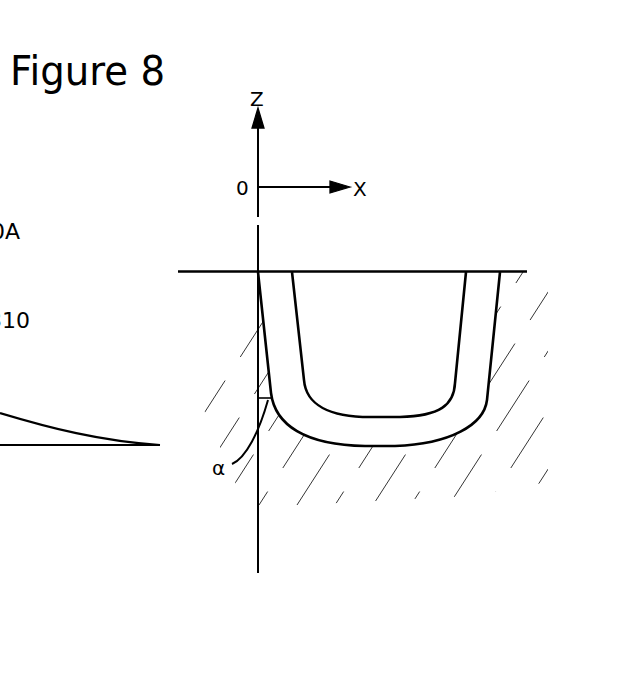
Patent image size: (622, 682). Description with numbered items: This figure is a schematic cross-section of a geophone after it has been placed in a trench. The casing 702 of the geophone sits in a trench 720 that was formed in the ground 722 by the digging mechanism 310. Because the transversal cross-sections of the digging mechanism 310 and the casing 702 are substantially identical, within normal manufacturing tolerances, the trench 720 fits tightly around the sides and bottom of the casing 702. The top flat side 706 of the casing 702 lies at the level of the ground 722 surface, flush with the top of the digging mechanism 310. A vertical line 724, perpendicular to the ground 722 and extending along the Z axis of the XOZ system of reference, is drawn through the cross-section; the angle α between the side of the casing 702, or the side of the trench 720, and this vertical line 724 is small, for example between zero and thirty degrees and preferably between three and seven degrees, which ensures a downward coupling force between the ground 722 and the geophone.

The casing 702 is at (498, 300).
The top flat side 706 is at (397, 271).
The digging mechanism 310 is at (492, 358).
The trench 720 is at (358, 446).
The ground 722 is at (307, 478).
The vertical line 724 is at (258, 533).